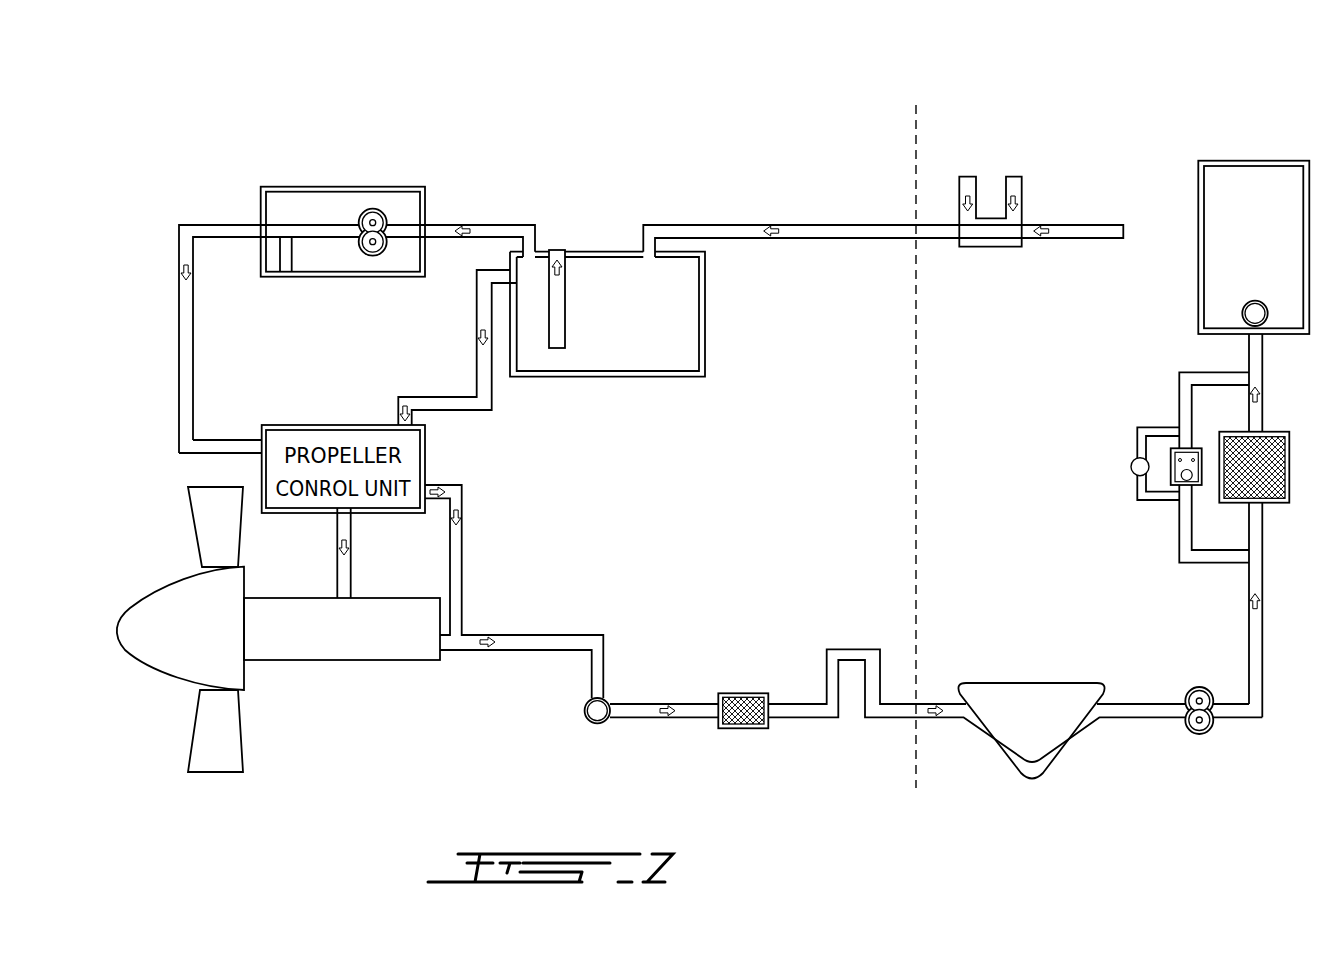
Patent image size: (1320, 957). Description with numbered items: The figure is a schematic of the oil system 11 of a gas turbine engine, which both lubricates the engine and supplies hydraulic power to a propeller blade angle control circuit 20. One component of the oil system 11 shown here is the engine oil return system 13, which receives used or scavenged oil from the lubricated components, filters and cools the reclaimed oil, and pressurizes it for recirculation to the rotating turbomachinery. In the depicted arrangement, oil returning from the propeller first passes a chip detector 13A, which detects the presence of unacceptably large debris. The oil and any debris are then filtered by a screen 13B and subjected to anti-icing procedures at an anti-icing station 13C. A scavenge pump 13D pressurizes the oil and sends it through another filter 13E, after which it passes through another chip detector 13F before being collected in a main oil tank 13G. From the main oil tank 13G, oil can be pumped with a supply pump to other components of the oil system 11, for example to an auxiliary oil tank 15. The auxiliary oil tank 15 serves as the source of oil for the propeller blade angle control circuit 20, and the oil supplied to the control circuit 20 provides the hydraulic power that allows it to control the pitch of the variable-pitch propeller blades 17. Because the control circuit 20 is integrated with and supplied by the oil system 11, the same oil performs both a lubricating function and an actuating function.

The oil system 11 is at (552, 168).
The engine oil return system 13 is at (872, 793).
The chip detector 13A is at (607, 703).
The screen 13B is at (742, 693).
The anti-icing station 13C is at (1028, 713).
The scavenge pump 13D is at (1220, 723).
The filter 13E is at (1216, 497).
The chip detector 13F is at (1242, 313).
The main oil tank 13G is at (1257, 161).
The auxiliary oil tank 15 is at (705, 325).
The propeller blades 17 is at (200, 513).
The propeller blade angle control circuit 20 is at (243, 288).